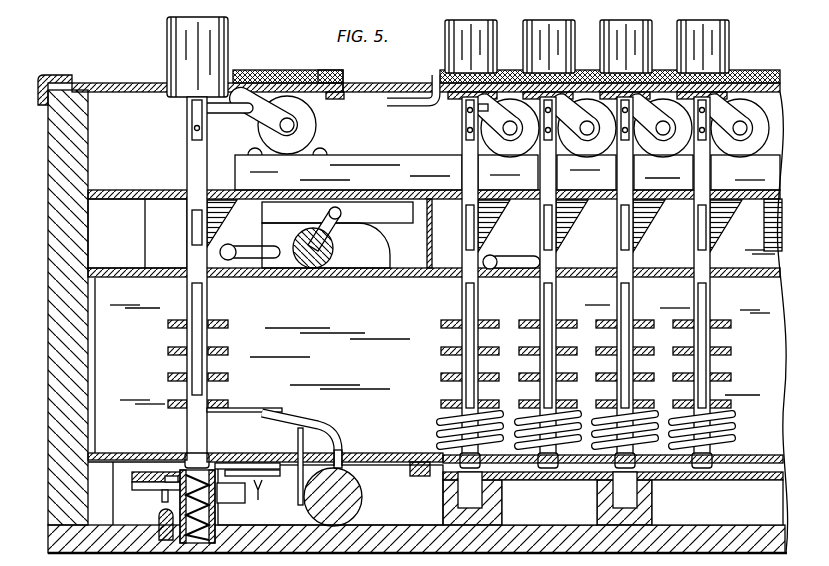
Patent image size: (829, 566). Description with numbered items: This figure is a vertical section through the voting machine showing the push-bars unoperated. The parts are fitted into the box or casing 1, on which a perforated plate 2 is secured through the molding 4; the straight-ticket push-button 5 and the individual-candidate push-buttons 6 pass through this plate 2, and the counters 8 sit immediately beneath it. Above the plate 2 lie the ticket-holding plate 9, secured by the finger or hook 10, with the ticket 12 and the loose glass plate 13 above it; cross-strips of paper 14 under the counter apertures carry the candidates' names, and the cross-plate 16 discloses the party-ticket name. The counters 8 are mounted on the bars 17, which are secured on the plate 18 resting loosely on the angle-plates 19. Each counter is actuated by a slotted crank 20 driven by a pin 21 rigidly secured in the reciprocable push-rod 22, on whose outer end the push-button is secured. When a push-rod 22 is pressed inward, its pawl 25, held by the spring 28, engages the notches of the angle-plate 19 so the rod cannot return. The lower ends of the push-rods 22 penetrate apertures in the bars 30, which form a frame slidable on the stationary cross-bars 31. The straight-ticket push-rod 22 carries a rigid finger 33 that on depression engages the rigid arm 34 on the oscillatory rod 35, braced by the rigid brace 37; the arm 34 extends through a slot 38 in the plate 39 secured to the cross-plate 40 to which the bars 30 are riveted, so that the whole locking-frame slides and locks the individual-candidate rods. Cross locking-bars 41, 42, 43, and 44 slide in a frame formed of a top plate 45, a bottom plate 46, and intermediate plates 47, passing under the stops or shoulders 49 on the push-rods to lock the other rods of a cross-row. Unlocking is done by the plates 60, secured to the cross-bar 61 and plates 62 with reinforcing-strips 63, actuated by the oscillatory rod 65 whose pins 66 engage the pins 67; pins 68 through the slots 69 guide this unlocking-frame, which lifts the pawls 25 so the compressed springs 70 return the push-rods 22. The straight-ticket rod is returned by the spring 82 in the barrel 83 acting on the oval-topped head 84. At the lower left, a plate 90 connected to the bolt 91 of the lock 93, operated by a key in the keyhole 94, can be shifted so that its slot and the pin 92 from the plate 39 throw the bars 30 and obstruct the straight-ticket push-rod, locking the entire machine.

The box or casing 1 is at (48, 194).
The plate 2 is at (126, 92).
The molding 4 is at (70, 75).
The straight-ticket push-button 5 is at (228, 40).
The push-buttons 6 is at (574, 48).
The counters 8 is at (292, 150).
The ticket-holding plate 9 is at (770, 82).
The finger or hook 10 is at (411, 100).
The ticket 12 is at (346, 82).
The loose glass plate 13 is at (290, 72).
The cross-strips of paper 14 is at (337, 92).
The cross-plate 16 is at (328, 74).
The bars 17 is at (745, 172).
The plate 18 is at (148, 190).
The angle-plates 19 is at (220, 193).
The crank 20 is at (301, 125).
The pin 21 is at (226, 113).
The push-rod 22 is at (194, 434).
The pawl 25 is at (190, 232).
The spring 28 is at (190, 150).
The bars 30 is at (642, 502).
The stationary cross-bars 31 is at (613, 498).
The rigid finger 33 is at (258, 408).
The rigid arm 34 is at (300, 424).
The oscillatory rod 35 is at (363, 497).
The rigid brace 37 is at (298, 484).
The slot 38 is at (348, 455).
The plate 39 is at (388, 453).
The cross-plate 40 is at (425, 476).
The locking-bar 41 is at (229, 320).
The locking-bar 42 is at (504, 354).
The locking-bar 43 is at (606, 369).
The locking-bar 44 is at (651, 407).
The top plate 45 is at (744, 278).
The bottom plate 46 is at (763, 459).
The intermediate plates 47 is at (434, 336).
The stops or shoulders 49 is at (480, 314).
The plates 60 is at (730, 241).
The cross-bar 61 is at (431, 224).
The plates 62 is at (339, 245).
The reinforcing-strips 63 is at (337, 212).
The rod 65 is at (333, 255).
The pins 66 is at (339, 229).
The pins 67 is at (328, 213).
The pins 68 is at (230, 246).
The slots 69 is at (262, 260).
The compressed springs 70 is at (533, 430).
The spring 82 is at (215, 506).
The barrel 83 is at (216, 536).
The head 84 is at (215, 462).
The plate 90 is at (135, 471).
The bolt 91 is at (231, 493).
The pin 92 is at (264, 497).
The lock 93 is at (118, 495).
The keyhole 94 is at (160, 500).